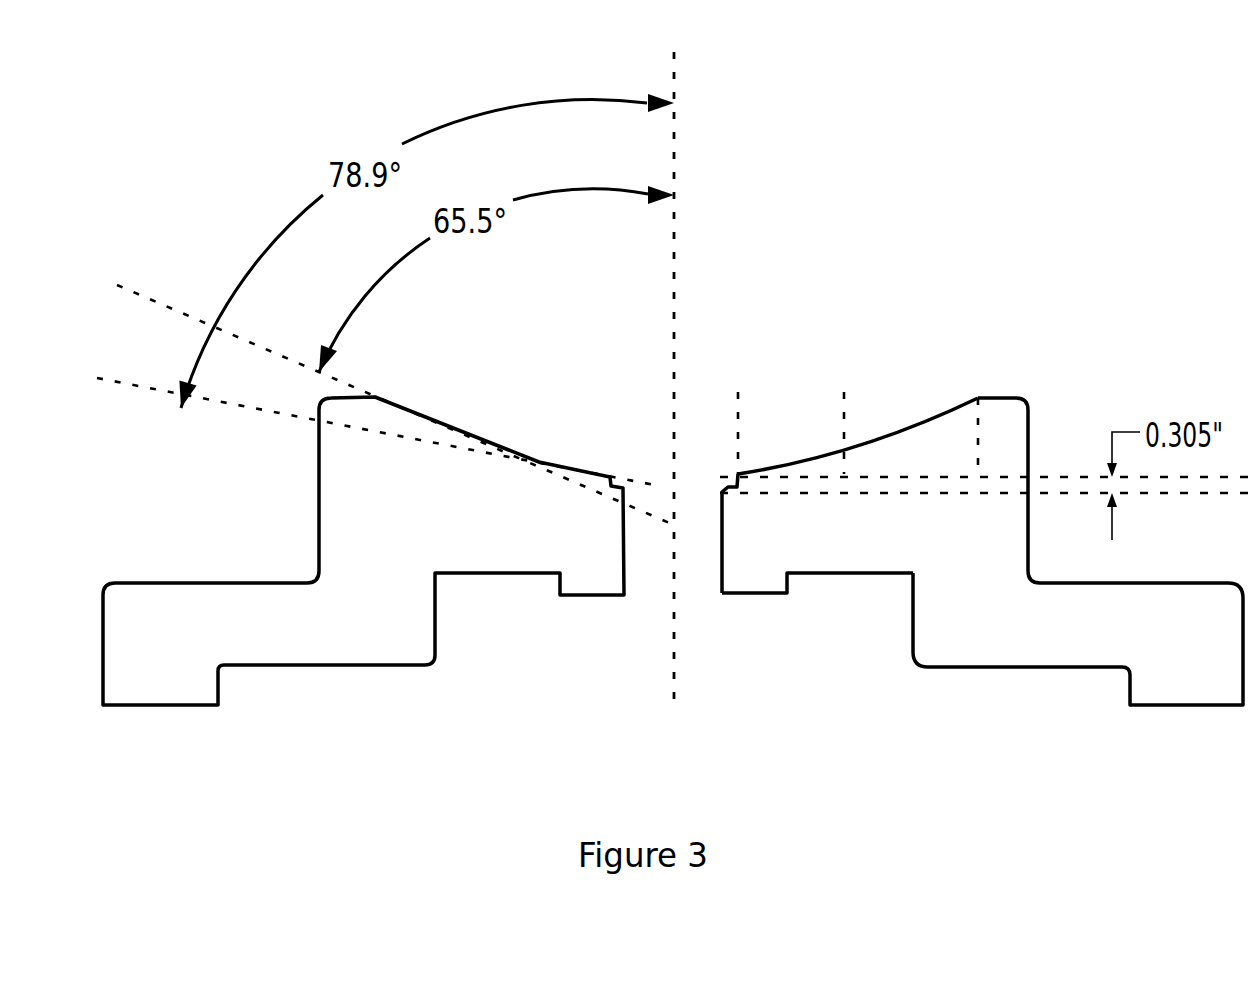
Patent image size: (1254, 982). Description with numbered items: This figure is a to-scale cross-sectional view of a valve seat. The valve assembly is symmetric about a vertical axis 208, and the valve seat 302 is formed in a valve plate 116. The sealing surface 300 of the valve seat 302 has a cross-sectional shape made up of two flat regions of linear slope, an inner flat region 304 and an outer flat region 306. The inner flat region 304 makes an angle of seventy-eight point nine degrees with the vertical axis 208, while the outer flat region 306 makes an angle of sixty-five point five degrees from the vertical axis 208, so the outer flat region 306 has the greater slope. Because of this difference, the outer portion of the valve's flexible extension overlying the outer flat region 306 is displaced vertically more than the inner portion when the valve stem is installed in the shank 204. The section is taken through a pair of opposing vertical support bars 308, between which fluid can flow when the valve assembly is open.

The valve plate 116 is at (1208, 665).
The shank 204 is at (724, 542).
The vertical axis 208 is at (676, 273).
The sealing surface 300 is at (873, 442).
The valve seat 302 is at (993, 572).
The inner flat region 304 is at (810, 414).
The outer flat region 306 is at (931, 414).
The vertical support bars 308 is at (498, 575).